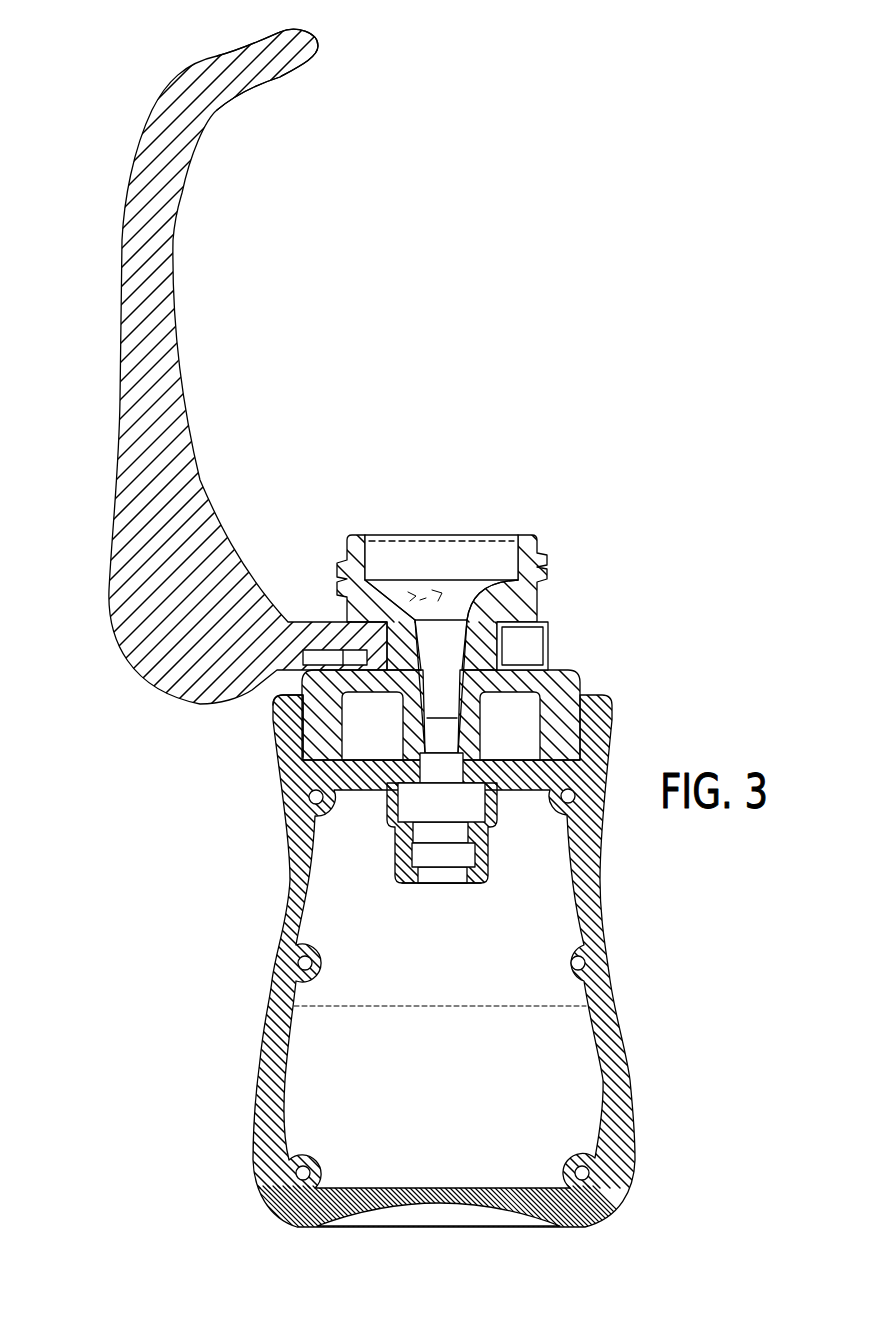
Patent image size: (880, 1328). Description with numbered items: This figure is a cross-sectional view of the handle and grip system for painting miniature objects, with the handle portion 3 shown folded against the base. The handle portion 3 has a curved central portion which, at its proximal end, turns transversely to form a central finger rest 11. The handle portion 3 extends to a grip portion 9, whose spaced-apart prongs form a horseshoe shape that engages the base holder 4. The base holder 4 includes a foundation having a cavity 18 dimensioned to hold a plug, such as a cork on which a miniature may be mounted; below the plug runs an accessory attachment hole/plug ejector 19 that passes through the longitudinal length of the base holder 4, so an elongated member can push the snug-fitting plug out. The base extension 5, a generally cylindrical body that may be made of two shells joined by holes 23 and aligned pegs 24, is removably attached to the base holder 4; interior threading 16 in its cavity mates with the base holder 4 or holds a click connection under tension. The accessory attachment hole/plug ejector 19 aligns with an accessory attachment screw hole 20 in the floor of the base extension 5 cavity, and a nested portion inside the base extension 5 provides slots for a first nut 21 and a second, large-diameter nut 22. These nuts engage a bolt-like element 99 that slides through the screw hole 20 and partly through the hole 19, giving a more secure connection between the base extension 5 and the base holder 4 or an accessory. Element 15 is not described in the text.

The handle portion 3 is at (120, 334).
The central finger rest 11 is at (250, 44).
The nozzle 15 is at (547, 582).
The cavity 18 is at (443, 557).
The accessory attachment hole/plug ejector 19 is at (450, 612).
The grip portion 9 is at (549, 643).
The base holder 4 is at (586, 682).
The interior threading 16 is at (300, 713).
The base extension 5 is at (620, 1057).
The holes 23 is at (315, 800).
The pegs 24 is at (300, 966).
The accessory attachment screw hole 20 is at (443, 788).
The first nut 21 is at (462, 857).
The second nut 22 is at (423, 792).
The bolt-like element 99 is at (427, 882).